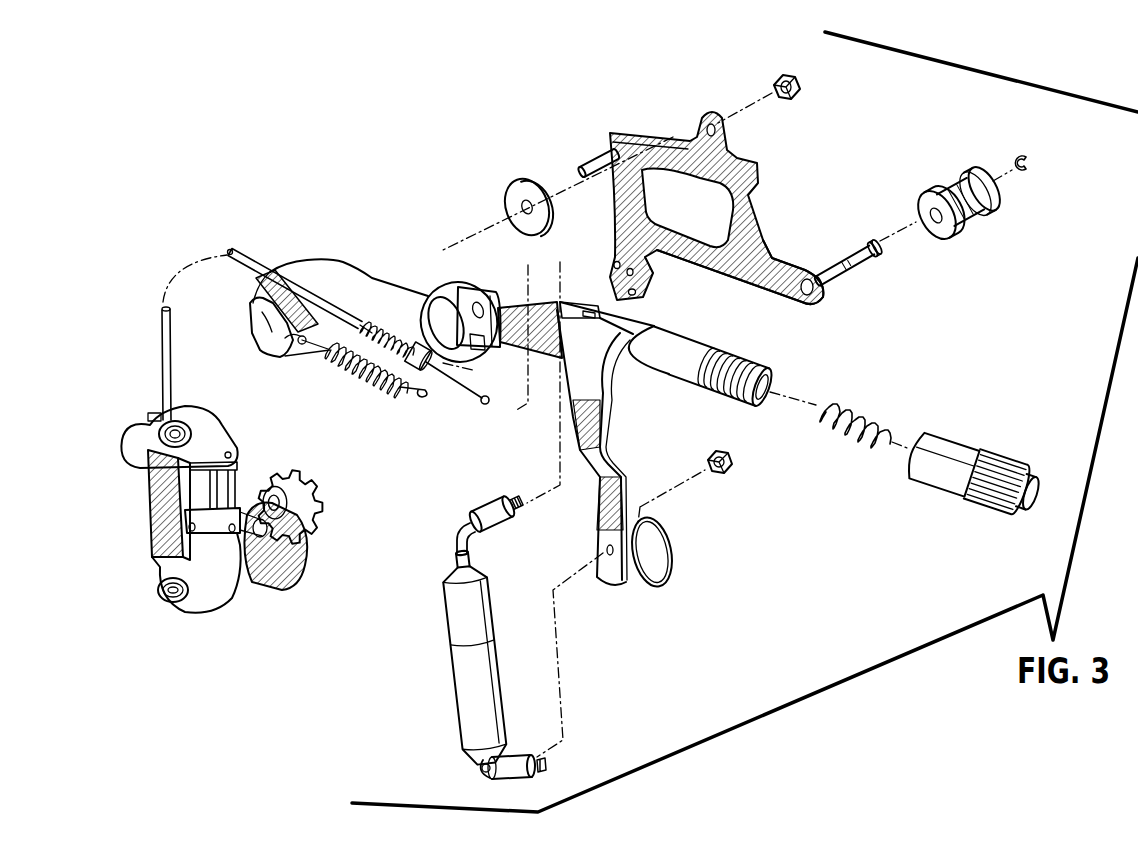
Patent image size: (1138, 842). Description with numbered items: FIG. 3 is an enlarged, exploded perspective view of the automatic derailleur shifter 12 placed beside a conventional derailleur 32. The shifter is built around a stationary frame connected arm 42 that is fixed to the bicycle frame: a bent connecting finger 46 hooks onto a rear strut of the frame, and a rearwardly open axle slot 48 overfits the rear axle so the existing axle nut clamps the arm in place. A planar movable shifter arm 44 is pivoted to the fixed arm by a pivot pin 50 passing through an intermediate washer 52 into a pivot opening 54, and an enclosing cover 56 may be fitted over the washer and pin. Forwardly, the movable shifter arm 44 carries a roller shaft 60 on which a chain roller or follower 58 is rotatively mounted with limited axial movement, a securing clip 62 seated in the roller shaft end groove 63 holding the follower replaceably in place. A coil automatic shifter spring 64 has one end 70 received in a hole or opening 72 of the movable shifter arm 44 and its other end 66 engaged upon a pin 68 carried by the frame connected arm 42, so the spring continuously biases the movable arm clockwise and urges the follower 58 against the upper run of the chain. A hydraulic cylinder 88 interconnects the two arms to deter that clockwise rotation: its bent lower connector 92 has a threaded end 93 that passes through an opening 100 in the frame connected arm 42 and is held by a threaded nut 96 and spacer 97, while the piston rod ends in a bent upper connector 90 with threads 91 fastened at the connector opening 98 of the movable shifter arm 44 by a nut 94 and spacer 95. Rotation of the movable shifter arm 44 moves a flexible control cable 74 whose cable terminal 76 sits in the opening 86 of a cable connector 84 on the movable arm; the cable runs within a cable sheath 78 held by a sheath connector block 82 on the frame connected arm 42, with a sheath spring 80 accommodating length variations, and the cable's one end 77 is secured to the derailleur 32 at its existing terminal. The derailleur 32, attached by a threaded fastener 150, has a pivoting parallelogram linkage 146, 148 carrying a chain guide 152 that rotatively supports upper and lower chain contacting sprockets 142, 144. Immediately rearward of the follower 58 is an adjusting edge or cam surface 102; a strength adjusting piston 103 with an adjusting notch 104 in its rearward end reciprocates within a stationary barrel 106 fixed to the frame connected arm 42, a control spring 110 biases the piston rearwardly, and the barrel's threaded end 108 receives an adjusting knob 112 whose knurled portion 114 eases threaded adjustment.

The automatic derailleur shifter 12 is at (361, 257).
The derailleur 32 is at (156, 605).
The frame connected arm 42 is at (603, 438).
The movable shifter arm 44 is at (753, 228).
The bent connecting finger 46 is at (658, 591).
The axle slot 48 is at (253, 305).
The pivot pin 50 is at (586, 168).
The washer 52 is at (520, 210).
The pivot opening 54 is at (462, 294).
The enclosing cover 56 is at (433, 297).
The chain roller or follower 58 is at (984, 222).
The roller shaft 60 is at (855, 268).
The securing clip 62 is at (1028, 164).
The roller shaft end groove 63 is at (873, 240).
The automatic shifter spring 64 is at (362, 378).
The other end of coil spring 66 is at (293, 343).
The pin 68 is at (300, 346).
The one end of automatic shifter spring 70 is at (424, 400).
The hole or opening 72 is at (615, 264).
The flexible control cable 74 is at (463, 385).
The cable terminal 76 is at (484, 404).
The one end of flexible control cable 77 is at (172, 417).
The cable sheath 78 is at (258, 260).
The sheath spring 80 is at (371, 328).
The sheath connector block 82 is at (414, 346).
The cable connector 84 is at (653, 279).
The opening 86 is at (650, 293).
The hydraulic cylinder 88 is at (467, 660).
The bent upper connector 90 is at (461, 538).
The threads 91 is at (513, 503).
The bent lower connector 92 is at (477, 775).
The threaded end 93 is at (548, 766).
The nut 94 is at (798, 88).
The spacer 95 is at (478, 507).
The threaded nut 96 is at (744, 492).
The spacer 97 is at (510, 752).
The connector opening 98 is at (718, 131).
The opening 100 is at (605, 547).
The adjusting edge or cam surface 102 is at (770, 240).
The strength adjusting piston 103 is at (622, 333).
The adjusting notch 104 is at (590, 318).
The stationary barrel 106 is at (713, 355).
The threaded end 108 is at (754, 362).
The control spring 110 is at (866, 416).
The adjusting knob 112 is at (947, 447).
The knurled portion 114 is at (993, 463).
The upper chain contacting sprocket 142 is at (152, 416).
The lower chain contacting sprocket 144 is at (302, 494).
The parallelogram linkage 146 is at (147, 522).
The parallelogram linkage 148 is at (238, 470).
The threaded fastener 150 is at (133, 454).
The chain guide 152 is at (263, 583).